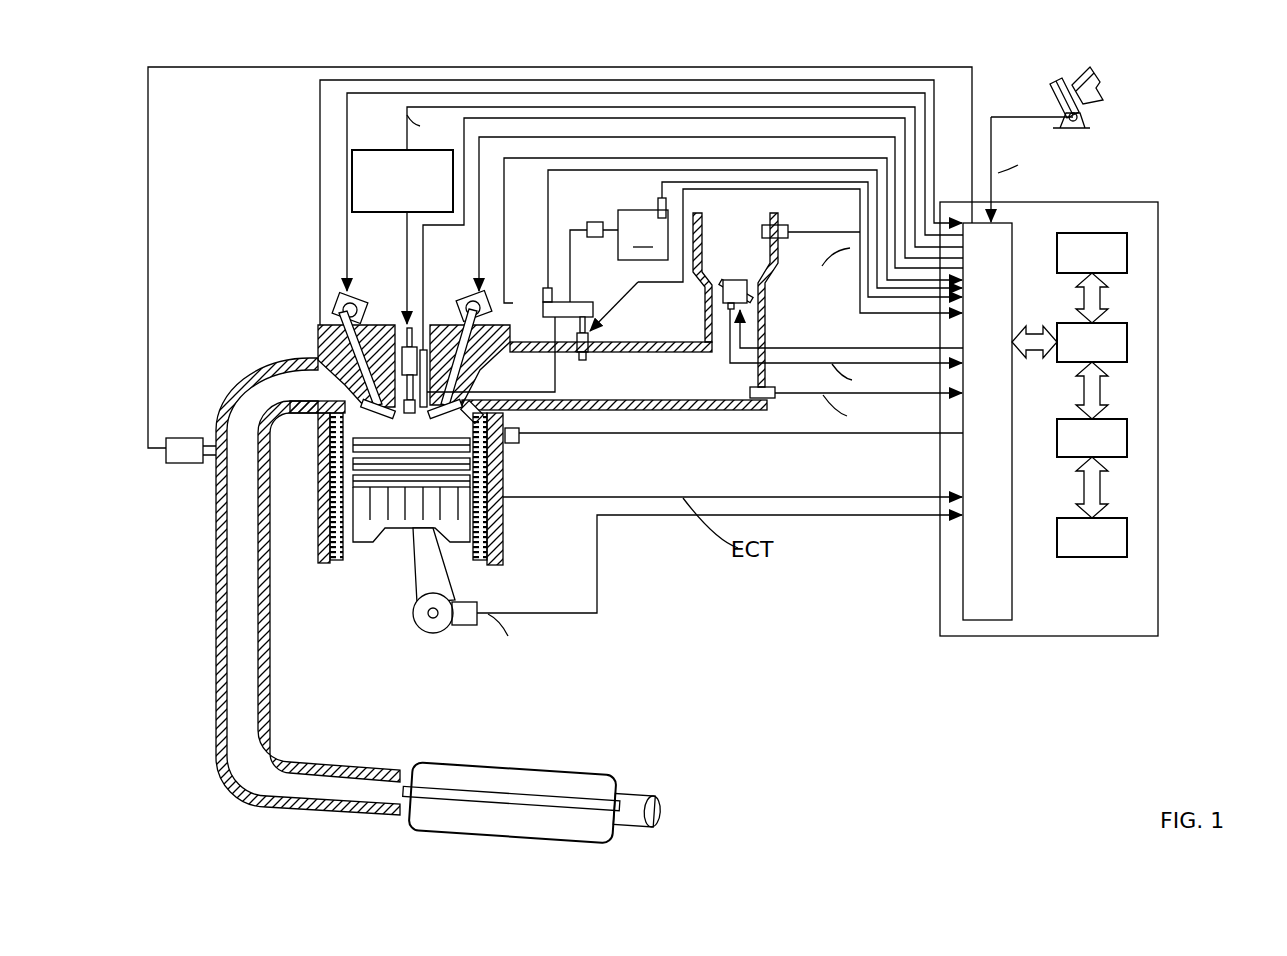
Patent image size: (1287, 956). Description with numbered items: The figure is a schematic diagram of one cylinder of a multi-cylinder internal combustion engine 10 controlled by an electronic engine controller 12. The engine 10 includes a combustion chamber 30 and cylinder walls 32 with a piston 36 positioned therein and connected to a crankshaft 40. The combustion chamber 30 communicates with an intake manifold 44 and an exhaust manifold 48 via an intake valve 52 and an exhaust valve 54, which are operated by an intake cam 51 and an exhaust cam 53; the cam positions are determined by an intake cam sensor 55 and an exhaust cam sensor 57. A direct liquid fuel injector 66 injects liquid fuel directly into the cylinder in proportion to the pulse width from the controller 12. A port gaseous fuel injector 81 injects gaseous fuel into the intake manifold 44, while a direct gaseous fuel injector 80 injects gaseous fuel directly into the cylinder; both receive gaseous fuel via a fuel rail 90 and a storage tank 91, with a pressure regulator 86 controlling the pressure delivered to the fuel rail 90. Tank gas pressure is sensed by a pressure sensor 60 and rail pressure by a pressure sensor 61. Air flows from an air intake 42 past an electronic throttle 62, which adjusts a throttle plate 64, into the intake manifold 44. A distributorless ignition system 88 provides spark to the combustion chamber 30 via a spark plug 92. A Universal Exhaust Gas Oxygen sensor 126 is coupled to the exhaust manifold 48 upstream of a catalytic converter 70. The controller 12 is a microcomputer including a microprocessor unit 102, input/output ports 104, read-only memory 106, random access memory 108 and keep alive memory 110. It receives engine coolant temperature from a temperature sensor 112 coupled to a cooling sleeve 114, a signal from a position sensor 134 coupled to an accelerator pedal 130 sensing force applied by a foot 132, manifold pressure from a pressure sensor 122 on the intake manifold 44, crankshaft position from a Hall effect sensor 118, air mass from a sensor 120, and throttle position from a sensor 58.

The internal combustion engine 10 is at (253, 282).
The electronic engine controller 12 is at (1095, 403).
The combustion chamber 30 is at (410, 430).
The cylinder walls 32 is at (360, 556).
The piston 36 is at (398, 517).
The crankshaft 40 is at (418, 628).
The air intake 42 is at (720, 260).
The intake manifold 44 is at (659, 392).
The exhaust manifold 48 is at (277, 397).
The intake cam 51 is at (703, 214).
The intake valve 52 is at (458, 400).
The exhaust cam 53 is at (655, 192).
The exhaust valve 54 is at (362, 386).
The intake cam sensor 55 is at (490, 318).
The exhaust cam sensor 57 is at (333, 313).
The throttle position sensor 58 is at (710, 307).
The pressure sensor 60 is at (658, 203).
The pressure sensor 61 is at (543, 290).
The electronic throttle 62 is at (750, 288).
The throttle plate 64 is at (723, 287).
The direct liquid fuel injector 66 is at (427, 350).
The catalytic converter 70 is at (427, 762).
The direct gaseous fuel injector 80 is at (522, 436).
The port gaseous fuel injector 81 is at (588, 360).
The pressure regulator 86 is at (587, 228).
The distributorless ignition system 88 is at (373, 150).
The fuel rail 90 is at (583, 302).
The storage tank 91 is at (643, 235).
The spark plug 92 is at (400, 348).
The microprocessor unit 102 is at (1127, 333).
The input/output ports 104 is at (1014, 230).
The read-only memory 106 is at (1127, 250).
The random access memory 108 is at (1127, 435).
The keep alive memory 110 is at (1127, 535).
The temperature sensor 112 is at (518, 445).
The cooling sleeve 114 is at (505, 520).
The Hall effect sensor 118 is at (465, 626).
The air mass sensor 120 is at (785, 225).
The pressure sensor 122 is at (775, 400).
The Universal Exhaust Gas Oxygen sensor 126 is at (166, 455).
The accelerator pedal 130 is at (1050, 93).
The foot 132 is at (1100, 80).
The position sensor 134 is at (1085, 117).